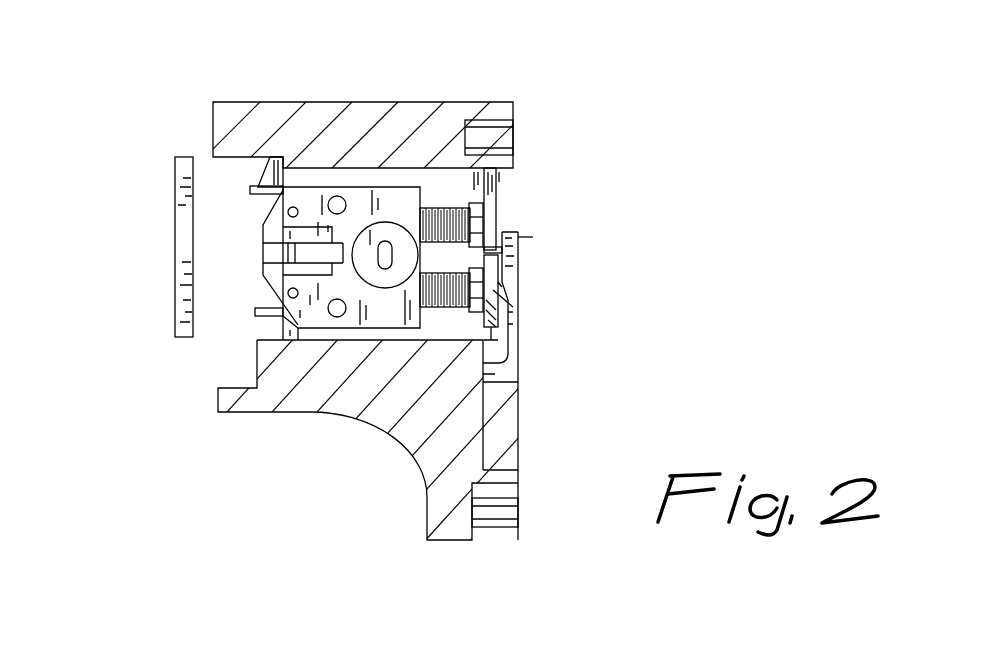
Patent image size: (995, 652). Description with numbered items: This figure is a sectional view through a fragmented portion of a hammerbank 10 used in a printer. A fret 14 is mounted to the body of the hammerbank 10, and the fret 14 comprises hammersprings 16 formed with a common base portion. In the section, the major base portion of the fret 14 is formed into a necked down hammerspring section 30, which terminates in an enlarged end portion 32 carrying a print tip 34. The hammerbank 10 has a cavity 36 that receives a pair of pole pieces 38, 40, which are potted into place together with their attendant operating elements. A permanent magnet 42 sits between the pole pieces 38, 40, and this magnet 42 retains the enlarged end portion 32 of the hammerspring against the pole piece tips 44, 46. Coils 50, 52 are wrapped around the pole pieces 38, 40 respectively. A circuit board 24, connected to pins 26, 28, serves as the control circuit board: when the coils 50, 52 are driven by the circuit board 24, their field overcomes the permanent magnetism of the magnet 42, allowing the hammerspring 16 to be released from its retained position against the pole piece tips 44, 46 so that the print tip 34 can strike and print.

The hammerbank 10 is at (290, 438).
The fret 14 is at (520, 430).
The hammersprings 16 is at (546, 345).
The circuit board 24 is at (170, 176).
The pin 26 is at (262, 190).
The pin 28 is at (258, 315).
The necked down hammerspring section 30 is at (500, 322).
The enlarged end portion 32 is at (500, 266).
The print tip 34 is at (522, 237).
The cavity 36 is at (490, 205).
The pole piece 38 is at (383, 192).
The pole piece 40 is at (372, 312).
The permanent magnet 42 is at (298, 253).
The pole piece tip 44 is at (484, 225).
The pole piece tip 46 is at (508, 272).
The coil 50 is at (470, 220).
The coil 52 is at (445, 305).